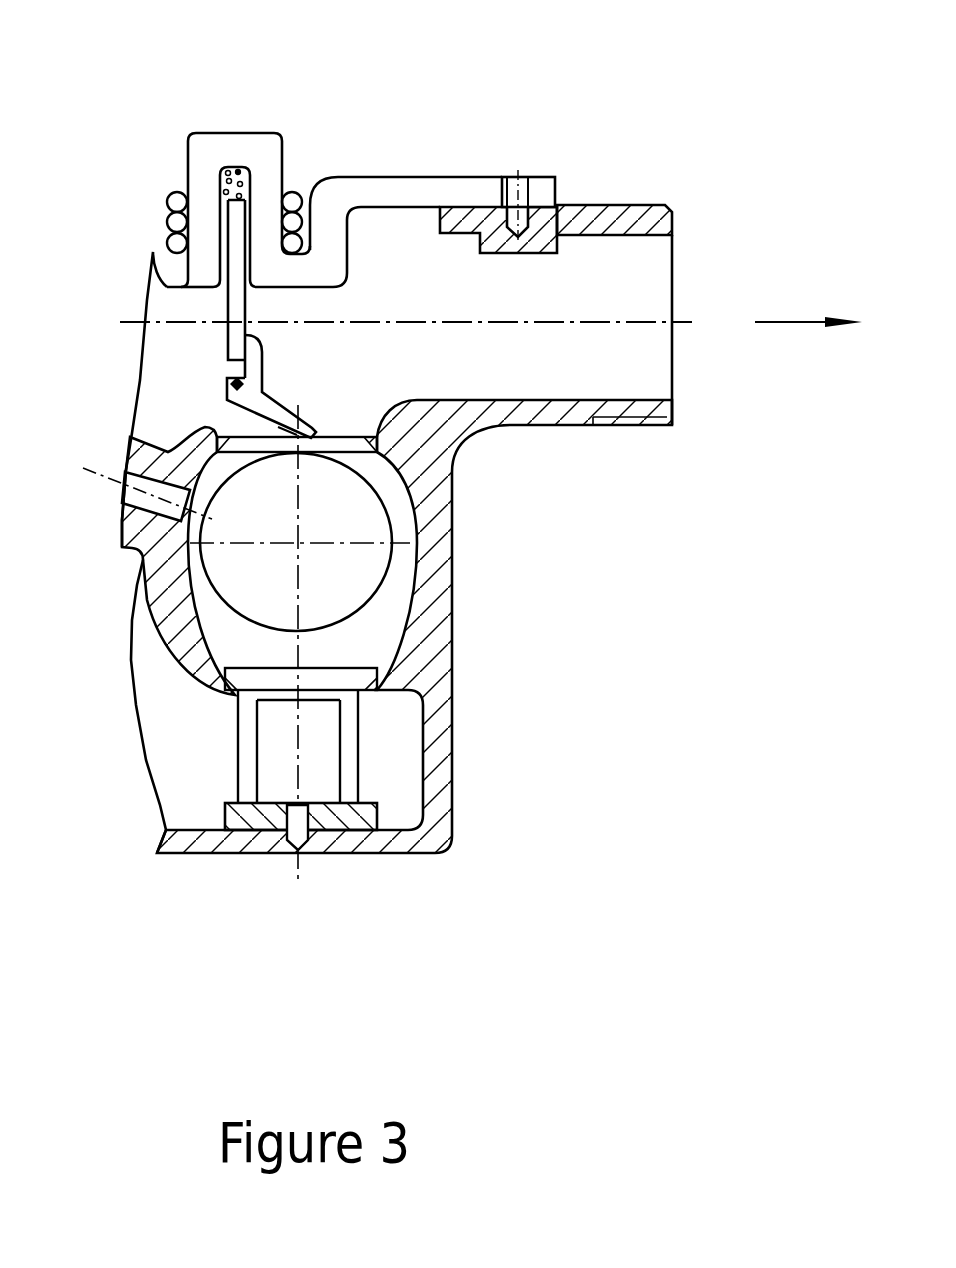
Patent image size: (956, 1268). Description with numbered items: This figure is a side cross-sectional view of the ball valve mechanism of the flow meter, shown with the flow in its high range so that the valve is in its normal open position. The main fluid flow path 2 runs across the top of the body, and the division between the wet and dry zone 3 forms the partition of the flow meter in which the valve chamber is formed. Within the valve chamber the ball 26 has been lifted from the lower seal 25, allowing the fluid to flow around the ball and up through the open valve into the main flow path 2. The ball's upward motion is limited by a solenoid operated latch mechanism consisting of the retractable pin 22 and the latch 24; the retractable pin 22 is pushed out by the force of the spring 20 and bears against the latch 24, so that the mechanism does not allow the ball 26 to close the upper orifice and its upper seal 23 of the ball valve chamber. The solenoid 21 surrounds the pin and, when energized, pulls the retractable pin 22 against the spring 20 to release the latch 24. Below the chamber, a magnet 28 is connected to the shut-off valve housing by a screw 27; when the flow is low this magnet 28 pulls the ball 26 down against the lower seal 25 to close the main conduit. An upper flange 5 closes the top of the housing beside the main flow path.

The main fluid flow path 2 is at (577, 215).
The division between the wet and dry zone 3 is at (343, 185).
The clamping flange 5 is at (463, 212).
The spring 20 is at (222, 180).
The solenoid 21 is at (173, 243).
The retractable pin 22 is at (228, 340).
The upper seal 23 is at (380, 442).
The latch 24 is at (393, 478).
The lower seal 25 is at (383, 692).
The ball 26 is at (350, 585).
The screw 27 is at (293, 835).
The magnet 28 is at (245, 820).